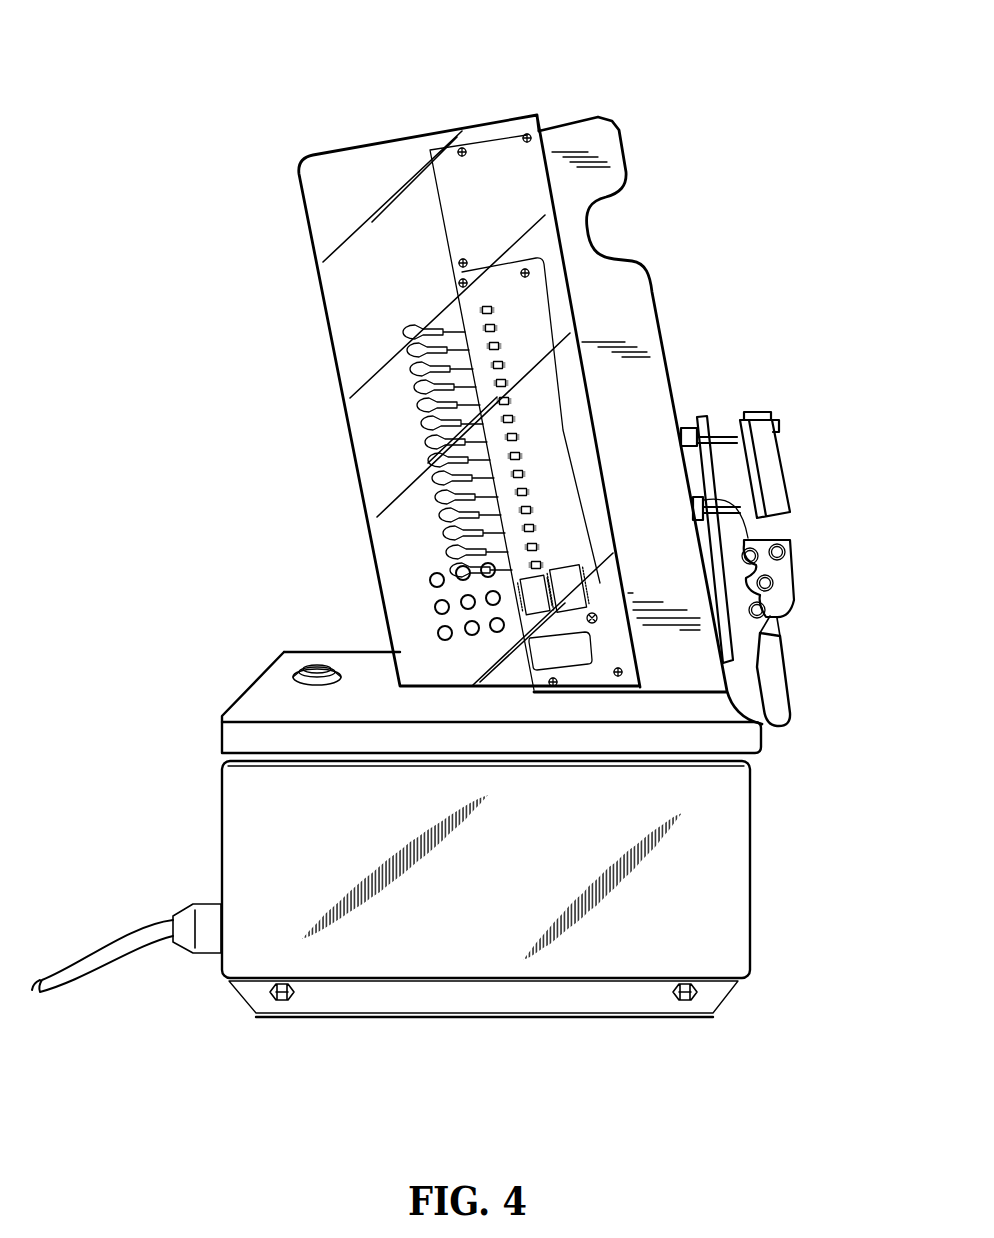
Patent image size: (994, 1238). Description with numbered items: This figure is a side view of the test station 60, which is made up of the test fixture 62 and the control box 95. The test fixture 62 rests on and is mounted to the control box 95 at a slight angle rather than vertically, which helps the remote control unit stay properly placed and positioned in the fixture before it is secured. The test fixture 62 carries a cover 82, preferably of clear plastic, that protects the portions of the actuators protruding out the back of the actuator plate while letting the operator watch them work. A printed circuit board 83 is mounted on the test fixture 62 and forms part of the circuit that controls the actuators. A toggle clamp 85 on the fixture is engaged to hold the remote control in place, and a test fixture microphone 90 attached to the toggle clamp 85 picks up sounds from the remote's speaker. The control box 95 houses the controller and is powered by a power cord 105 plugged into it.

The test station 60 is at (760, 129).
The test fixture 62 is at (577, 160).
The cover 82 is at (348, 163).
The printed circuit board 83 is at (505, 440).
The toggle clamp 85 is at (772, 678).
The test fixture microphone 90 is at (750, 535).
The control box 95 is at (604, 950).
The power cord 105 is at (142, 942).